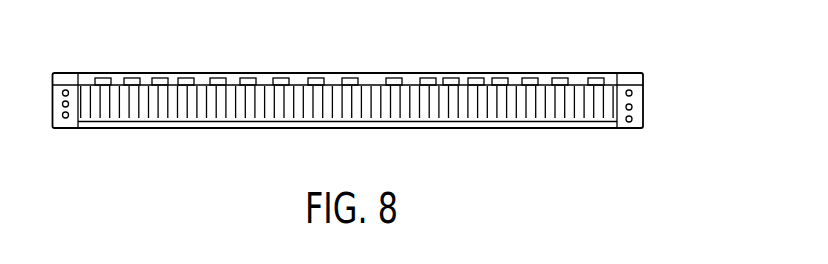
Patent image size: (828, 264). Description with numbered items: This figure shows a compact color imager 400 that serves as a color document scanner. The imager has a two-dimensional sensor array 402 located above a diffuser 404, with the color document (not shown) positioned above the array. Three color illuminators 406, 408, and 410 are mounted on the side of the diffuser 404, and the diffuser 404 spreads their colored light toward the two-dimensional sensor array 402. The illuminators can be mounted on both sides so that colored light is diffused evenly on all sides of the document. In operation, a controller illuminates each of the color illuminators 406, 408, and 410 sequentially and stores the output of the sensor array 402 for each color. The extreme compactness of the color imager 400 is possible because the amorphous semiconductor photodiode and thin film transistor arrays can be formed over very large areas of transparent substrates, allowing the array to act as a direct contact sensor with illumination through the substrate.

The color imager 400 is at (667, 72).
The two-dimensional sensor array 402 is at (562, 73).
The diffuser 404 is at (583, 122).
The color illuminator 406 is at (633, 94).
The color illuminator 408 is at (633, 107).
The color illuminator 410 is at (633, 119).